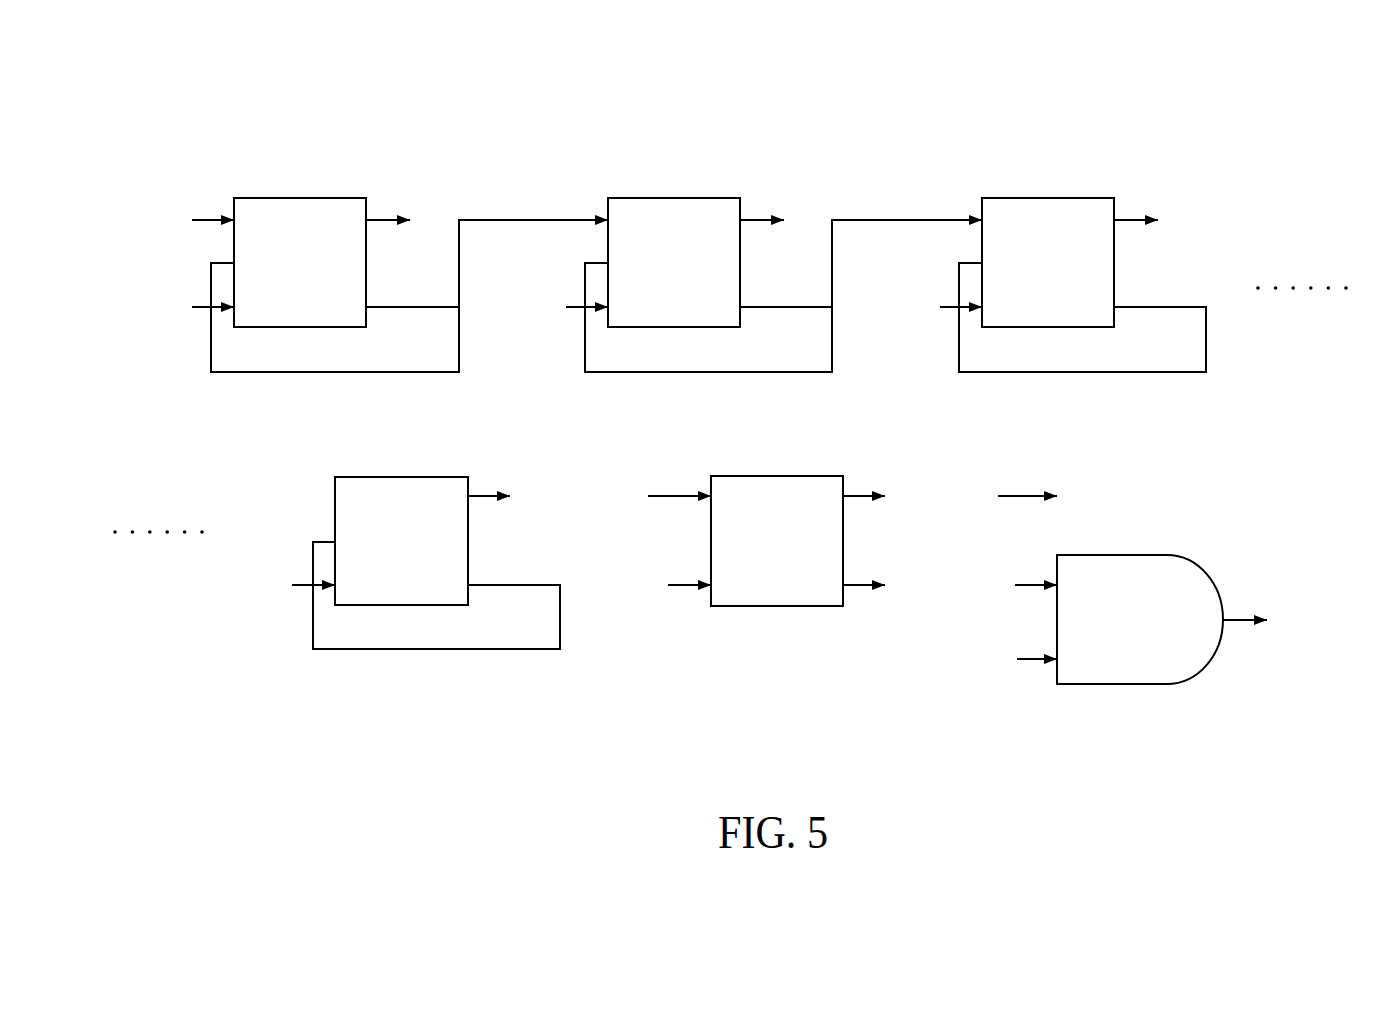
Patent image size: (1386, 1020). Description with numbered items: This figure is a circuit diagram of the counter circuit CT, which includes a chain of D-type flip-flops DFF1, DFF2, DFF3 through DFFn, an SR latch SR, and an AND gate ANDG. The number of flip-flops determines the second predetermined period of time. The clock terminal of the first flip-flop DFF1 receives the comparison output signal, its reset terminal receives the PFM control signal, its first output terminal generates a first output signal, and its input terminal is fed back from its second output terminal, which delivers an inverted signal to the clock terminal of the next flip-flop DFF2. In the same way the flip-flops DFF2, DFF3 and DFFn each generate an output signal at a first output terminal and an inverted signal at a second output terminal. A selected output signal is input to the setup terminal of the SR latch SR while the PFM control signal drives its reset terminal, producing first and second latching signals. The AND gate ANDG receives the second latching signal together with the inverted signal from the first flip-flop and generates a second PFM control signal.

The counter circuit CT is at (323, 139).
The D-type flip-flop DFF1 is at (400, 285).
The D-type flip-flop DFF2 is at (774, 285).
The D-type flip-flop DFF3 is at (1073, 285).
The D-type flip-flop DFFn is at (426, 563).
The SR latch SR is at (815, 541).
The AND gate ANDG is at (1167, 619).